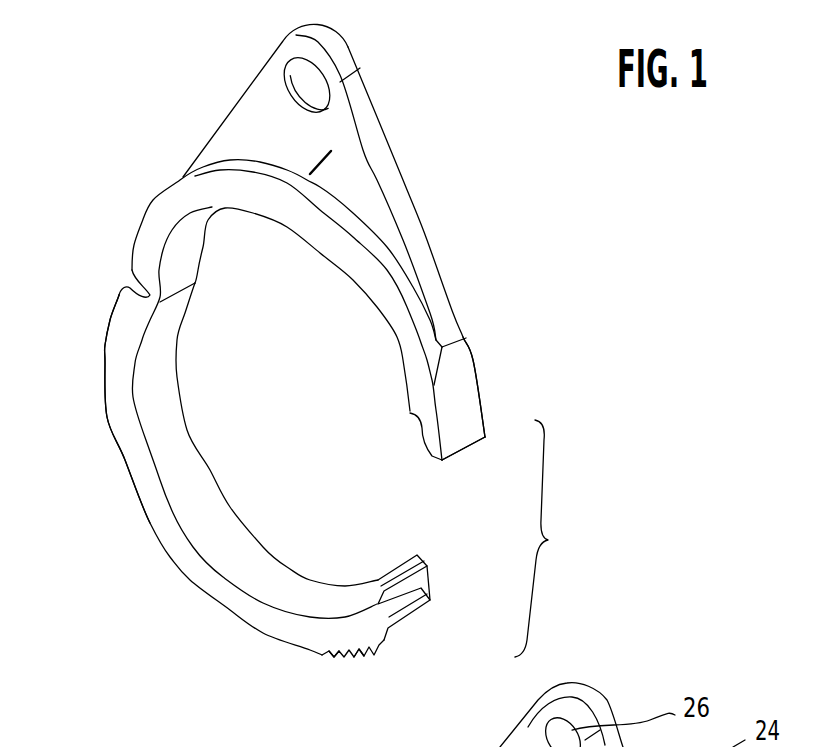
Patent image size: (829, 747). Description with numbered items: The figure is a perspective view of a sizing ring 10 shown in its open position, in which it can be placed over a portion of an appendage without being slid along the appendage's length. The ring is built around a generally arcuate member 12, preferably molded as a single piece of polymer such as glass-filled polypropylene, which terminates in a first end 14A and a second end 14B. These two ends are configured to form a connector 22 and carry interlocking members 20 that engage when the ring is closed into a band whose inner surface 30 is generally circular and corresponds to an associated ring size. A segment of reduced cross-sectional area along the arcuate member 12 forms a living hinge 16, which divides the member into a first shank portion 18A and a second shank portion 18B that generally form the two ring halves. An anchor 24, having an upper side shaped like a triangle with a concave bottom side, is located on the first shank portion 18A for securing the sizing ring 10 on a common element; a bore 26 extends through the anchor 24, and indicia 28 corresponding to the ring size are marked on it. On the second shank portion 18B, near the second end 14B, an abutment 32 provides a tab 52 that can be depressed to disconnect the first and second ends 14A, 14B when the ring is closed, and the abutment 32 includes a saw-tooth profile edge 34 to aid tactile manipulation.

The sizing ring 10 is at (480, 215).
The generally arcuate member 12 is at (200, 567).
The first end 14A is at (461, 451).
The second end 14B is at (422, 565).
The living hinge 16 is at (175, 318).
The first shank portion 18A is at (457, 375).
The second shank portion 18B is at (125, 467).
The interlocking members 20 is at (427, 440).
The connector 22 is at (547, 538).
The anchor 24 is at (368, 117).
The bore 26 is at (317, 72).
The size marking 28 is at (352, 161).
The inner surface 30 is at (196, 467).
The abutment 32 is at (378, 648).
The saw-tooth profile edge 34 is at (360, 653).
The tab 52 is at (333, 657).